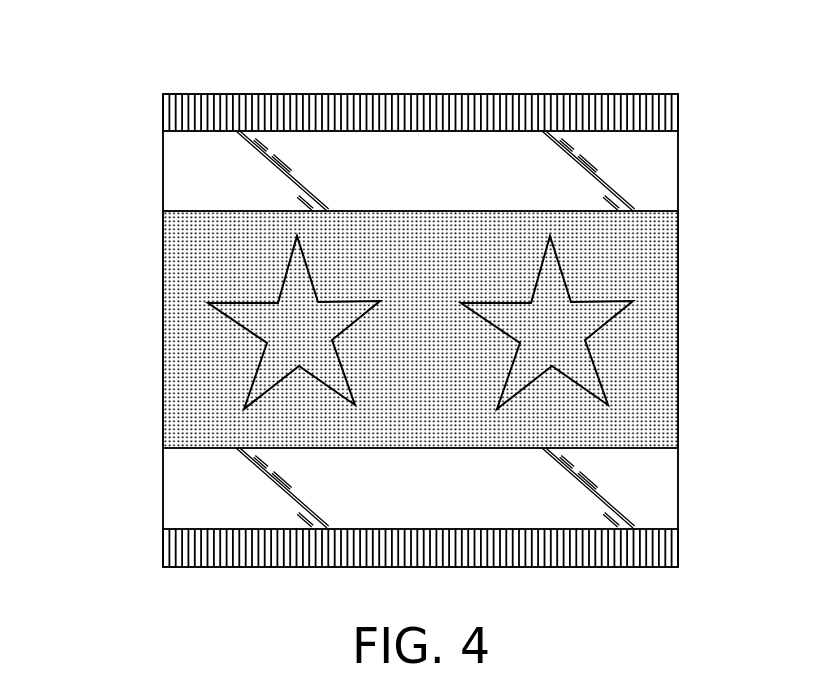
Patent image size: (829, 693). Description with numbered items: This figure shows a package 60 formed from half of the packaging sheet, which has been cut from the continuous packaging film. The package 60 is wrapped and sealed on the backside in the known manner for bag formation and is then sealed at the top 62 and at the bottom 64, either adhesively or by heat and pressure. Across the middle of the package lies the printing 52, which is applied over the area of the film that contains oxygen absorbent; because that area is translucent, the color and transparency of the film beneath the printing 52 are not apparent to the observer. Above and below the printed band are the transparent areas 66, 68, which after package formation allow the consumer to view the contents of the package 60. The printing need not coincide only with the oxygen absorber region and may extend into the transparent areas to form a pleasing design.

The package 60 is at (140, 126).
The top 62 is at (592, 105).
The bottom 64 is at (234, 560).
The transparent area 66 is at (655, 167).
The transparent area 68 is at (650, 488).
The printing 52 is at (648, 335).